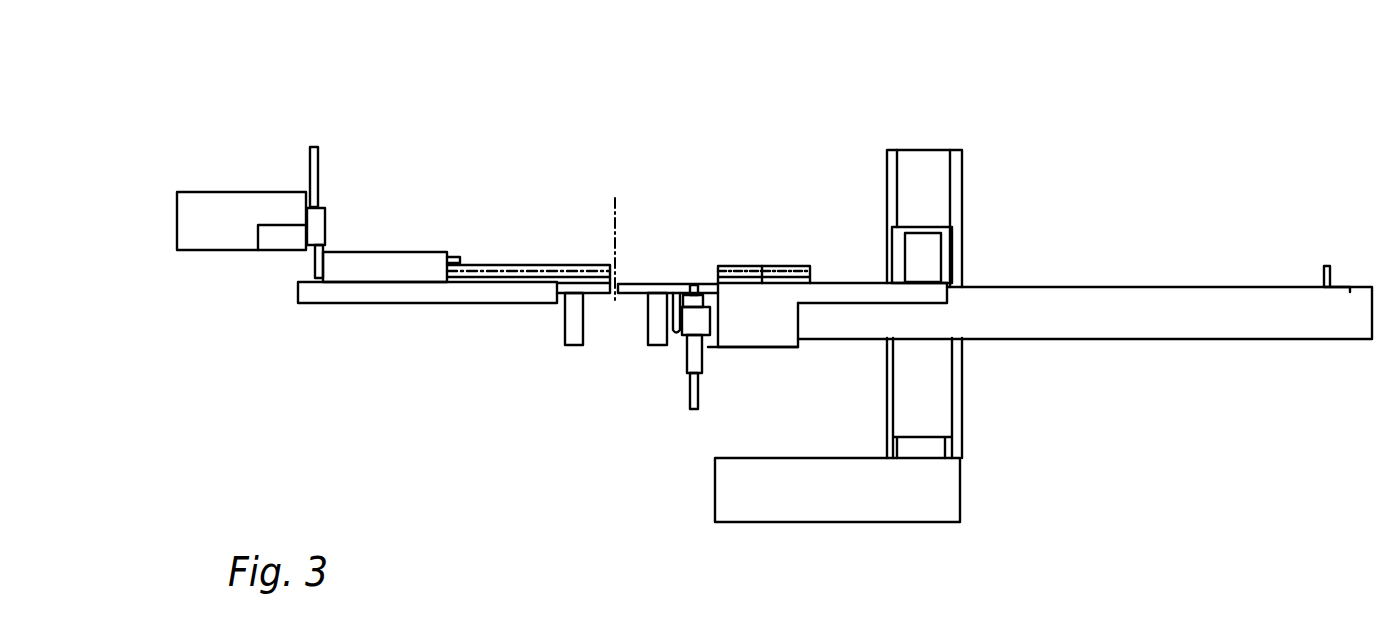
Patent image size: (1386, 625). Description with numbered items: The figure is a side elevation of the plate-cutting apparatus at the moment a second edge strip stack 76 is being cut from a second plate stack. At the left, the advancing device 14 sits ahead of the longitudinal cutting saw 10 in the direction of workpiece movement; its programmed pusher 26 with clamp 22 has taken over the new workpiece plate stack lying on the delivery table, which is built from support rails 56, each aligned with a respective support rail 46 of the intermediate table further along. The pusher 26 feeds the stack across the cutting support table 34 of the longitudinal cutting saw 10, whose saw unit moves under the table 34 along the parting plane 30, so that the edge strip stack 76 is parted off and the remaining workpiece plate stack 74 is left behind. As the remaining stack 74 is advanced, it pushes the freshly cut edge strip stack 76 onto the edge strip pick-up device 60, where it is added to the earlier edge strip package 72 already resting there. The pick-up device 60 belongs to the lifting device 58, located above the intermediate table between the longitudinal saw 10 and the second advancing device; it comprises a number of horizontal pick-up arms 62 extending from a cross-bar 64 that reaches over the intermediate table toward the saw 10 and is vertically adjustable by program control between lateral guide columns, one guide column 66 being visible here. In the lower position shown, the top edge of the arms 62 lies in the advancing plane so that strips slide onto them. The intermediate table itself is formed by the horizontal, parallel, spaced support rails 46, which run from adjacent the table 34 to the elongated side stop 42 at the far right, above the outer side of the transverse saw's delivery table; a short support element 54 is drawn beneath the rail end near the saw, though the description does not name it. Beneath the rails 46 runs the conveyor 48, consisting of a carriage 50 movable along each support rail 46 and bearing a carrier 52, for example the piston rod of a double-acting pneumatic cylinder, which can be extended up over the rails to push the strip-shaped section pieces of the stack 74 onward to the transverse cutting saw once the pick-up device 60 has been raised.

The longitudinal cutting saw 10 is at (632, 262).
The advancing device 14 is at (352, 232).
The clamp 22 is at (378, 265).
The programmed pusher 26 is at (195, 210).
The parting plane 30 is at (615, 198).
The cutting support table 34 is at (575, 292).
The side stop 42 is at (1336, 284).
The support rail 46 is at (1132, 328).
The conveyor 48 is at (731, 366).
The carriage 50 is at (760, 333).
The carrier 52 is at (692, 284).
The support leg 54 is at (686, 326).
The support rail 56 is at (327, 293).
The lifting device 58 is at (973, 180).
The edge strip pick-up device 60 is at (878, 320).
The pick-up arm 62 is at (828, 292).
The cross-bar 64 is at (935, 230).
The lateral guide column 66 is at (923, 165).
The edge strip package 72 is at (797, 250).
The remaining workpiece plate stack 74 is at (478, 242).
The edge strip stack 76 is at (743, 250).